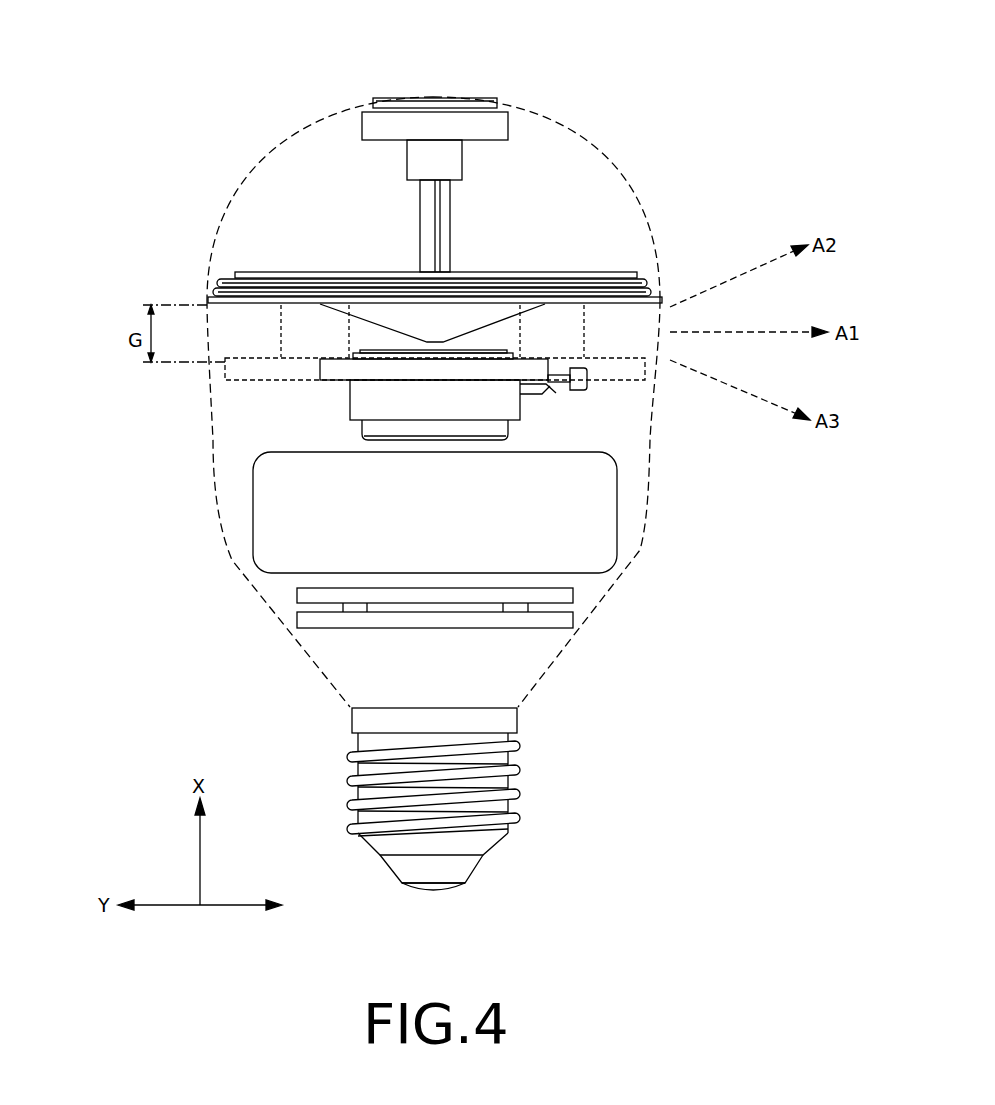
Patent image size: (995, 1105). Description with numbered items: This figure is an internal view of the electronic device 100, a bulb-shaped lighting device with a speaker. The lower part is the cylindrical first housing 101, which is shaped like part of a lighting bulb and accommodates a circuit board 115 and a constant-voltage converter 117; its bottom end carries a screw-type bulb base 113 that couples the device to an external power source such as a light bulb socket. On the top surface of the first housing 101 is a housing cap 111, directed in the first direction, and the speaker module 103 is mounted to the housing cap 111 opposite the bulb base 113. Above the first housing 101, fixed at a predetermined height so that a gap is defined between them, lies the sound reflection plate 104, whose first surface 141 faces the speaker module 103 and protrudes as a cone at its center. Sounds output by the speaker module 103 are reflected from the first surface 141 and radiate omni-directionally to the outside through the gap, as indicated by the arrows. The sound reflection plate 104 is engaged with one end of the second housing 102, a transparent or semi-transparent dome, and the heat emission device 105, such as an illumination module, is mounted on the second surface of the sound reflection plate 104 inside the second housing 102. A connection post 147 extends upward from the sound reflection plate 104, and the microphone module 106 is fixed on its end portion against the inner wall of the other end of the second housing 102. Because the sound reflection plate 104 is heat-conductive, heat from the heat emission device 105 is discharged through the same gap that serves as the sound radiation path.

The electronic device 100 is at (490, 364).
The first housing 101 is at (650, 538).
The second housing 102 is at (620, 180).
The speaker module 103 is at (350, 407).
The sound reflection plate 104 is at (648, 305).
The heat emission device 105 is at (590, 272).
The microphone module 106 is at (433, 97).
The housing cap 111 is at (260, 357).
The bulb base 113 is at (517, 770).
The circuit board 115 is at (573, 595).
The constant-voltage converter 117 is at (600, 507).
The first surface 141 is at (485, 326).
The connection post 147 is at (420, 227).